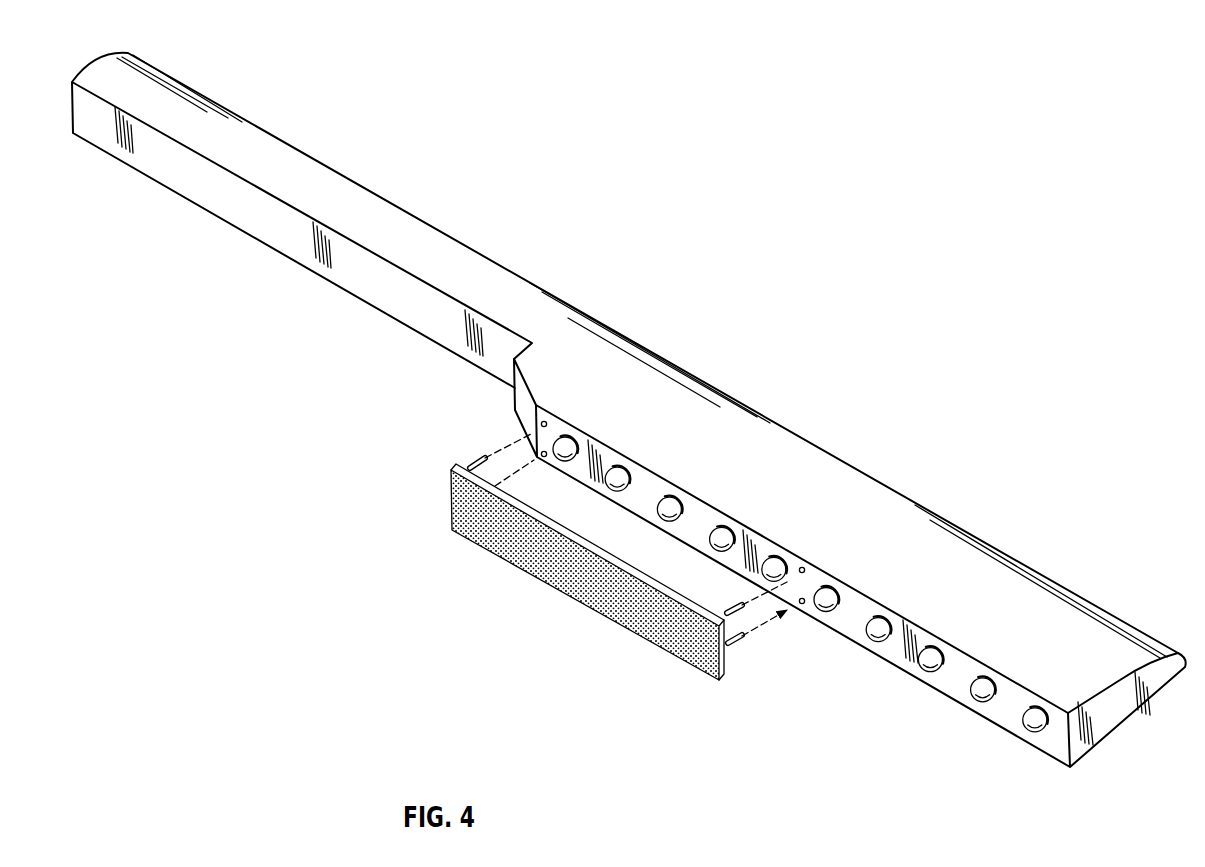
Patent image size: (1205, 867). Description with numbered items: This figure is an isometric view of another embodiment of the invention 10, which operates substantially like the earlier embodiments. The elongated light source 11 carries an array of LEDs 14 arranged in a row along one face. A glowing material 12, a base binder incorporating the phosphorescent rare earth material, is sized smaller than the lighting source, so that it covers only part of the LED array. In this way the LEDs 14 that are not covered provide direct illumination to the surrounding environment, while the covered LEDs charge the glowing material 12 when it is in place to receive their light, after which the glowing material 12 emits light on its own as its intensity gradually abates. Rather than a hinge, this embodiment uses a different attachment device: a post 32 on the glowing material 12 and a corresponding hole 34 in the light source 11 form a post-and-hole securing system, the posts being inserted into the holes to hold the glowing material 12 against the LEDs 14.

The invention 10 is at (629, 410).
The light source 11 is at (808, 490).
The glowing material 12 is at (600, 578).
The LEDs 14 is at (982, 683).
The post 32 is at (732, 650).
The hole 34 is at (798, 567).